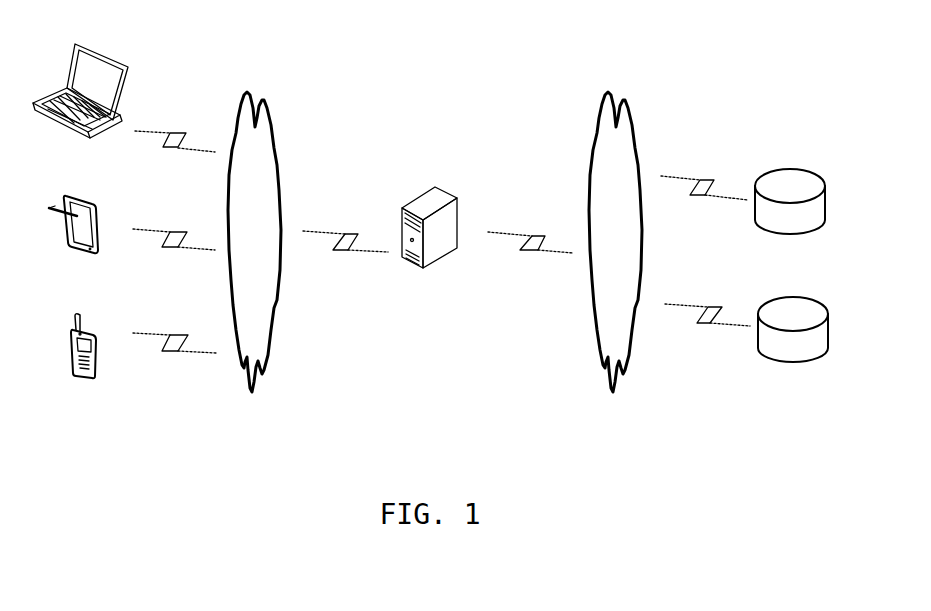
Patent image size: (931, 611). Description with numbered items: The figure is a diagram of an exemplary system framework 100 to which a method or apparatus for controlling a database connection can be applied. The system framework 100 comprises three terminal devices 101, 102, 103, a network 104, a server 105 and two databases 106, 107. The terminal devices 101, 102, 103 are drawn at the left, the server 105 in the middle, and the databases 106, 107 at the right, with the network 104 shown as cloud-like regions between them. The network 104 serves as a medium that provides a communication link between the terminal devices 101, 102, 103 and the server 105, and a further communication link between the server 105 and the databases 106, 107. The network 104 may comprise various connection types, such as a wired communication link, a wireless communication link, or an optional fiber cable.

The system framework 100 is at (622, 39).
The terminal device 101 is at (85, 358).
The terminal device 102 is at (73, 238).
The terminal device 103 is at (80, 102).
The network 104 is at (435, 242).
The server 105 is at (429, 239).
The database 106 is at (790, 212).
The database 107 is at (793, 342).